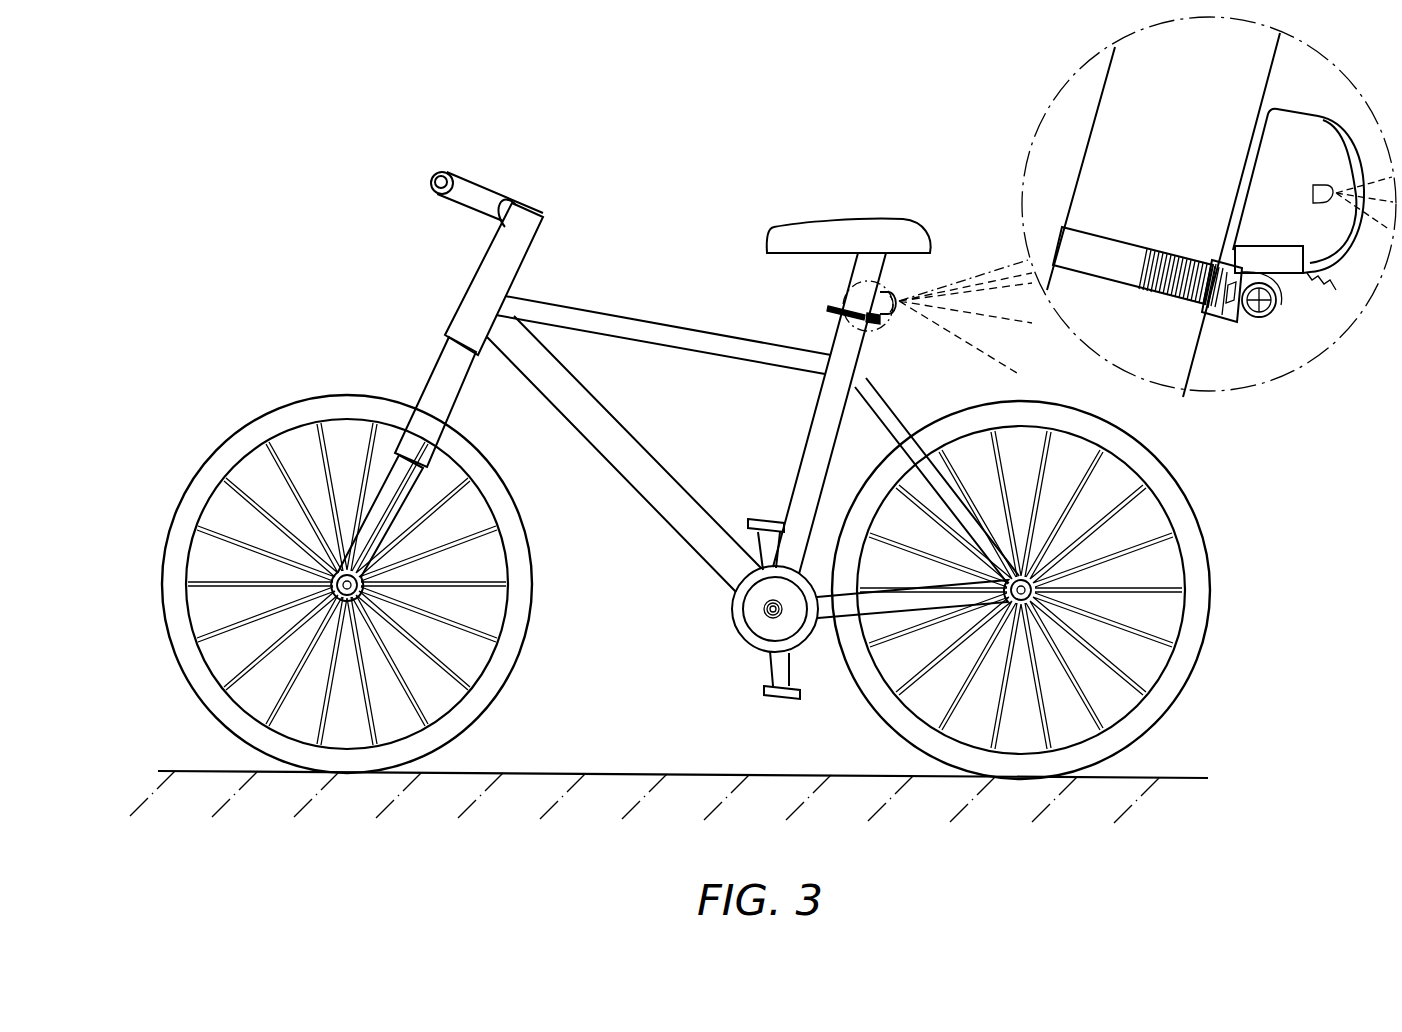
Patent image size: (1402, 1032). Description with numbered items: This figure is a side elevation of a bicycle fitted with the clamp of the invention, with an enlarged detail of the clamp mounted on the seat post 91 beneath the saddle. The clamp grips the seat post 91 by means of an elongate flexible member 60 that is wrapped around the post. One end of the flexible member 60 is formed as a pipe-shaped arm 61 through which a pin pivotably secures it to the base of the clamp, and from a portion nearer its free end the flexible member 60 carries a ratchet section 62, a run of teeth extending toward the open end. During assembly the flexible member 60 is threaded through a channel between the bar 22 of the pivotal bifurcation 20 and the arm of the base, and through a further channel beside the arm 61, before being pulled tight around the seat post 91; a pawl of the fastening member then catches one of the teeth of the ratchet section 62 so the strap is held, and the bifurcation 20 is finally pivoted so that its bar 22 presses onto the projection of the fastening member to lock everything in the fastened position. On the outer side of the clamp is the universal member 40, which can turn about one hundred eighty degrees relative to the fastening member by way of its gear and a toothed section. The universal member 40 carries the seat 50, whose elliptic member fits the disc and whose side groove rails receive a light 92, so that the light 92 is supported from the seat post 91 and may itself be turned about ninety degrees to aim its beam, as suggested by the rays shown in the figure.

The pivotal bifurcation 20 is at (875, 328).
The bar 22 is at (1230, 310).
The universal member 40 is at (1280, 309).
The seat 50 is at (898, 321).
The flexible member 60 is at (835, 311).
The pipe-shaped arm 61 is at (1223, 310).
The ratchet section 62 is at (1163, 250).
The seat post 91 is at (857, 271).
The light 92 is at (897, 290).